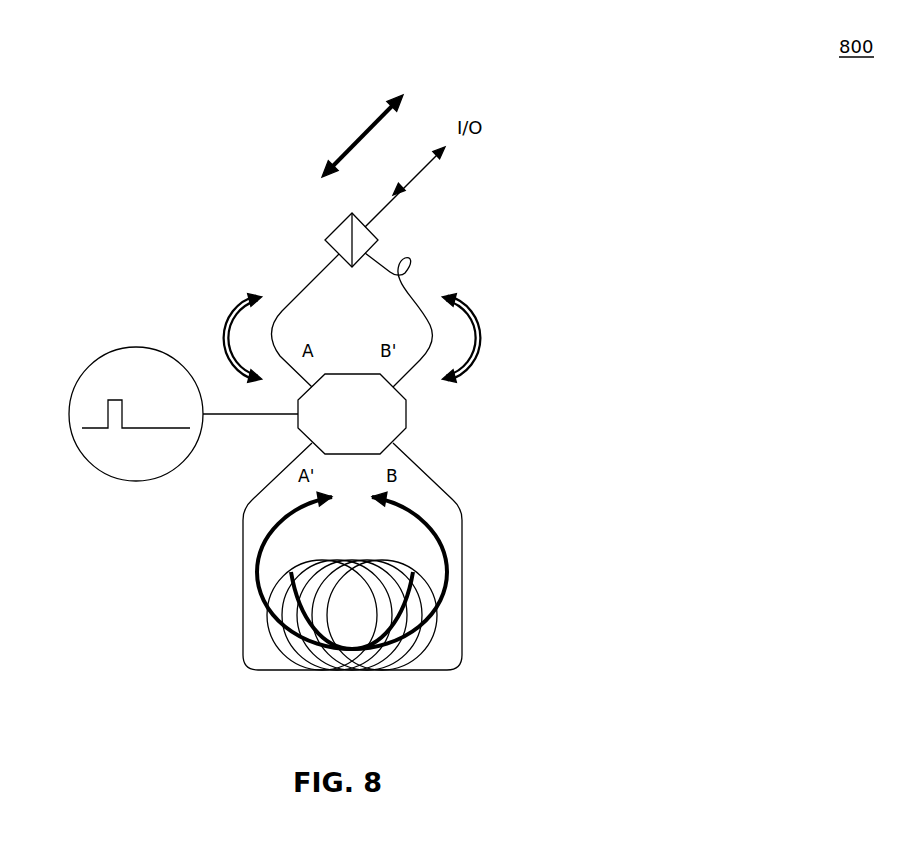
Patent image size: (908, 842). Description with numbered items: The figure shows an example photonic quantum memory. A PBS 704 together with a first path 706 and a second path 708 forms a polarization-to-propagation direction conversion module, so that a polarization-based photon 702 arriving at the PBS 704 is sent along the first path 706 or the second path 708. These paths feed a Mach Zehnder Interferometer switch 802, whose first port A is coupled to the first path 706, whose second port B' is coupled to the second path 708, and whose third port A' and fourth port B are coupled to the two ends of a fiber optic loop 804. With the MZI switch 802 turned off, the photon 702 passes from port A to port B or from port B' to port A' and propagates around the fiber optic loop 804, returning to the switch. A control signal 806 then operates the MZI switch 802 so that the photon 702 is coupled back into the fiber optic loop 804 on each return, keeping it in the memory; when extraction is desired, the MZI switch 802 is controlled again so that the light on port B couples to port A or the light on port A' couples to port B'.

The polarization-based photon 702 is at (420, 173).
The PBS 704 is at (334, 232).
The first path 706 is at (297, 302).
The second path 708 is at (407, 292).
The Mach Zehnder Interferometer (MZI) switch 802 is at (405, 433).
The fiber optic loop 804 is at (462, 612).
The control signal 806 is at (115, 482).